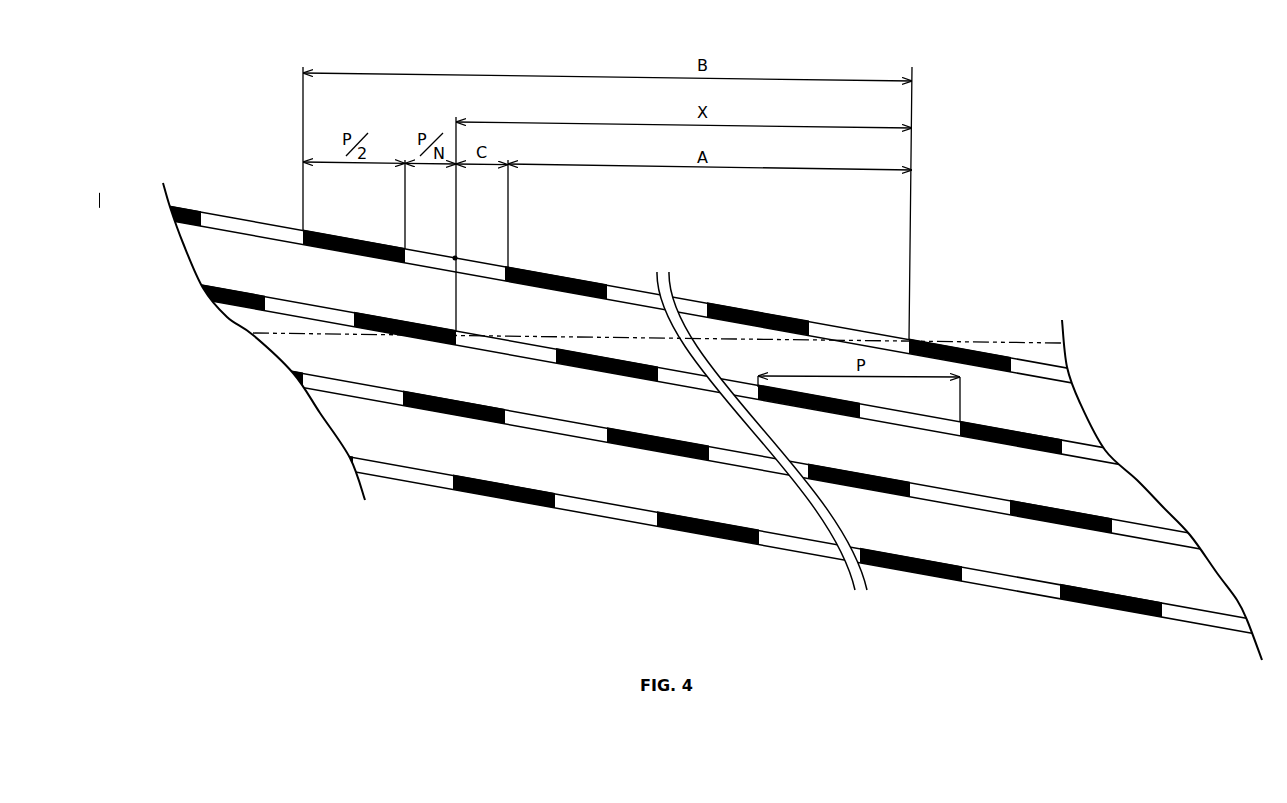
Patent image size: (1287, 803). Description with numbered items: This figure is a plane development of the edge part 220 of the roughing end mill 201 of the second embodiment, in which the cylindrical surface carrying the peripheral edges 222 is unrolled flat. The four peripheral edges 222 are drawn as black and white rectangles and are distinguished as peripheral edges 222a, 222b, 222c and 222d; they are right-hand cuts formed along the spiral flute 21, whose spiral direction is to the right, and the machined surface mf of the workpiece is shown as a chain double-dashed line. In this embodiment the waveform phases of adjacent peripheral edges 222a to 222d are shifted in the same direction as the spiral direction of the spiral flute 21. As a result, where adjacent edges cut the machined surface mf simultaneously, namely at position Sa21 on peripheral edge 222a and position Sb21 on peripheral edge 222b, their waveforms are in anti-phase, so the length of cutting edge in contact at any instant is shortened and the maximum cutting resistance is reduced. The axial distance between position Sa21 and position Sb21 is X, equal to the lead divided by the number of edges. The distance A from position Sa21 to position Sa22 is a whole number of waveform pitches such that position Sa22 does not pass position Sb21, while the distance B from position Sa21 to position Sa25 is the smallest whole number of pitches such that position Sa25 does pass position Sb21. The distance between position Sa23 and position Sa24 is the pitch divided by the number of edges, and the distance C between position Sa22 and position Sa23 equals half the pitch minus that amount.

The roughing end mill 201 is at (1190, 88).
The edge part 220 is at (1090, 174).
The spiral flute 21 is at (340, 415).
The peripheral edges 222 is at (693, 415).
The peripheral edge 222a is at (1067, 373).
The peripheral edge 222b is at (1113, 457).
The peripheral edge 222c is at (1190, 540).
The peripheral edge 222d is at (1247, 622).
The position Sa21 is at (910, 339).
The position Sa22 is at (508, 268).
The position Sa23 is at (455, 258).
The position Sa24 is at (405, 249).
The position Sa25 is at (303, 230).
The position Sb21 is at (456, 331).
The machined surface mf is at (1010, 341).